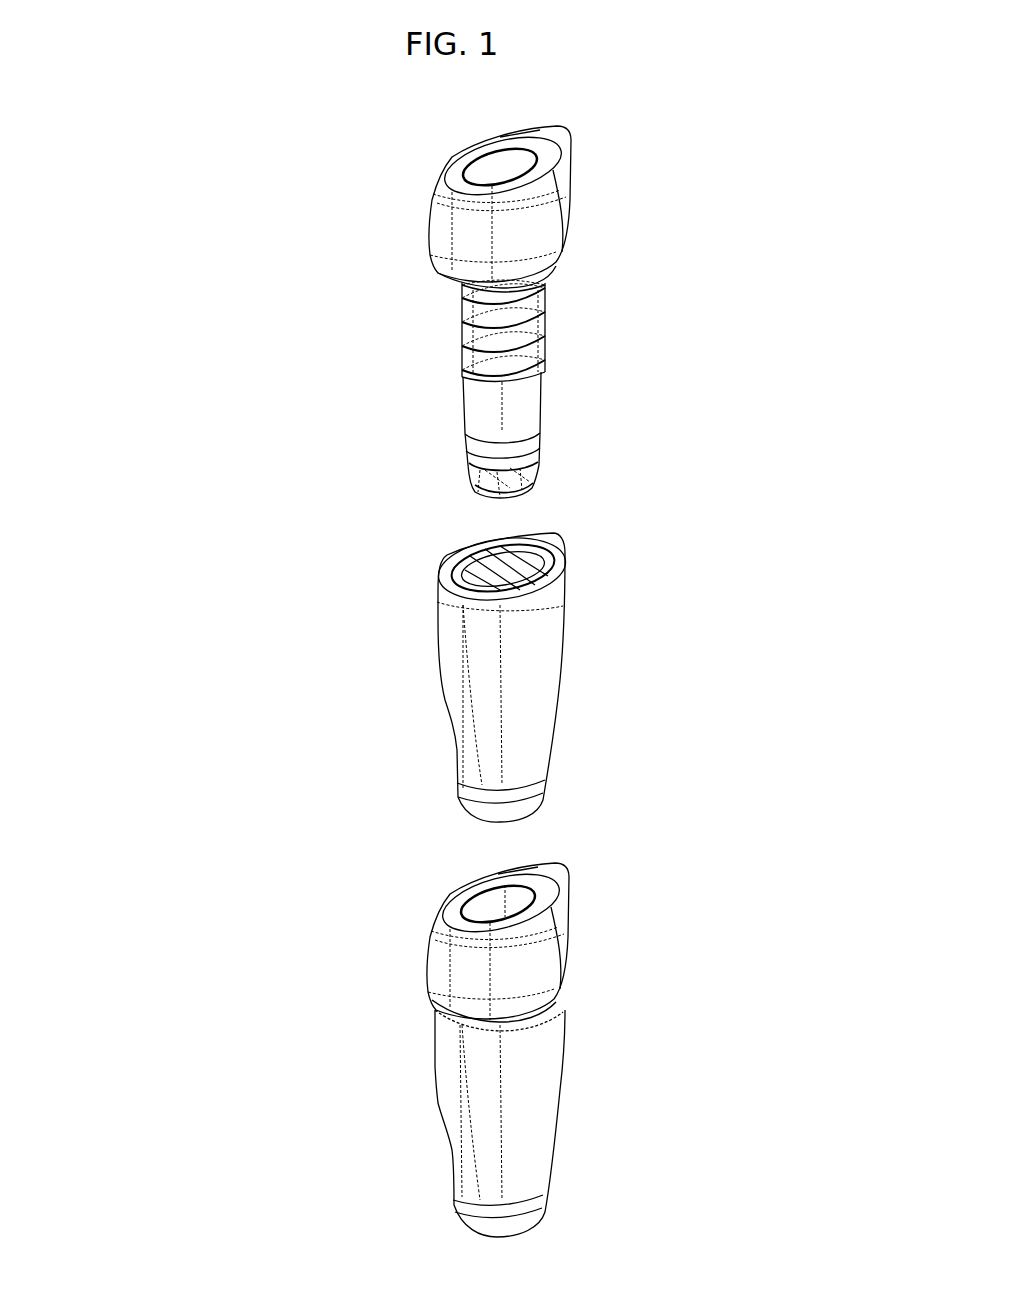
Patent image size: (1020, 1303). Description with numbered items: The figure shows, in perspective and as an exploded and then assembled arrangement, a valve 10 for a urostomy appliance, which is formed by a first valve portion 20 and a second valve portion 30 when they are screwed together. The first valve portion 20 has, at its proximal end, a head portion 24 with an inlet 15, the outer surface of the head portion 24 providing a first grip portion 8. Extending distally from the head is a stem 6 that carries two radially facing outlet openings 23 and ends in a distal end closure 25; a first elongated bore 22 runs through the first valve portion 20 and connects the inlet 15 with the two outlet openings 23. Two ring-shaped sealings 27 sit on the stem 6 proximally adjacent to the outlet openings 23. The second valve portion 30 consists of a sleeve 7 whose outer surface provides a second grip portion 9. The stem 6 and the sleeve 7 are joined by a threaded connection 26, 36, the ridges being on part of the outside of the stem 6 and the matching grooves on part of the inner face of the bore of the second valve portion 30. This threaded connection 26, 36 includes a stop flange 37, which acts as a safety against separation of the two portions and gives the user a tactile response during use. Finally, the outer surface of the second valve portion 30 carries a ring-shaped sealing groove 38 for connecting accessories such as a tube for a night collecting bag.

The stem 6 is at (497, 396).
The sleeve 7 is at (517, 662).
The first grip portion 8 is at (577, 145).
The second grip portion 9 is at (440, 612).
The valve 10 is at (228, 899).
The inlet 15 is at (510, 133).
The first valve portion 20 is at (200, 265).
The first elongated bore 22 is at (503, 164).
The outlet openings 23 is at (540, 457).
The head portion 24 is at (537, 204).
The distal end closure 25 is at (483, 499).
The threaded connection (stem part) 26 is at (545, 328).
The ring-shaped sealings 27 is at (541, 422).
The second valve portion 30 is at (203, 610).
The threaded connection (sleeve part) 36 is at (483, 577).
The stop flange 37 is at (557, 577).
The ring-shaped sealing groove 38 is at (540, 782).